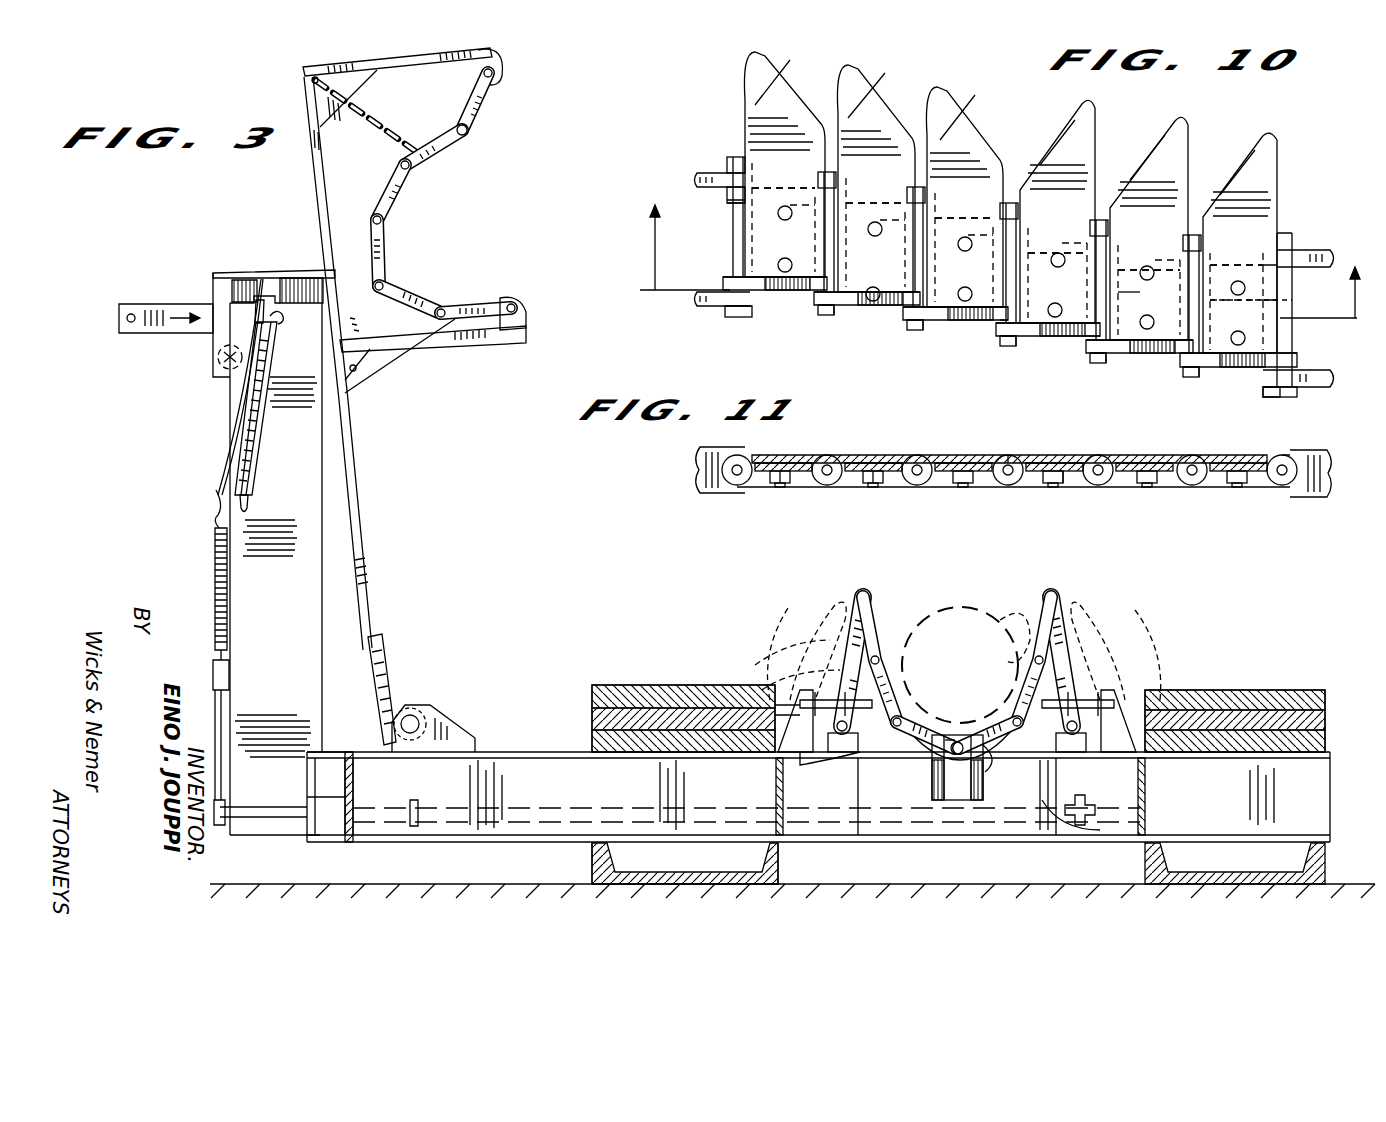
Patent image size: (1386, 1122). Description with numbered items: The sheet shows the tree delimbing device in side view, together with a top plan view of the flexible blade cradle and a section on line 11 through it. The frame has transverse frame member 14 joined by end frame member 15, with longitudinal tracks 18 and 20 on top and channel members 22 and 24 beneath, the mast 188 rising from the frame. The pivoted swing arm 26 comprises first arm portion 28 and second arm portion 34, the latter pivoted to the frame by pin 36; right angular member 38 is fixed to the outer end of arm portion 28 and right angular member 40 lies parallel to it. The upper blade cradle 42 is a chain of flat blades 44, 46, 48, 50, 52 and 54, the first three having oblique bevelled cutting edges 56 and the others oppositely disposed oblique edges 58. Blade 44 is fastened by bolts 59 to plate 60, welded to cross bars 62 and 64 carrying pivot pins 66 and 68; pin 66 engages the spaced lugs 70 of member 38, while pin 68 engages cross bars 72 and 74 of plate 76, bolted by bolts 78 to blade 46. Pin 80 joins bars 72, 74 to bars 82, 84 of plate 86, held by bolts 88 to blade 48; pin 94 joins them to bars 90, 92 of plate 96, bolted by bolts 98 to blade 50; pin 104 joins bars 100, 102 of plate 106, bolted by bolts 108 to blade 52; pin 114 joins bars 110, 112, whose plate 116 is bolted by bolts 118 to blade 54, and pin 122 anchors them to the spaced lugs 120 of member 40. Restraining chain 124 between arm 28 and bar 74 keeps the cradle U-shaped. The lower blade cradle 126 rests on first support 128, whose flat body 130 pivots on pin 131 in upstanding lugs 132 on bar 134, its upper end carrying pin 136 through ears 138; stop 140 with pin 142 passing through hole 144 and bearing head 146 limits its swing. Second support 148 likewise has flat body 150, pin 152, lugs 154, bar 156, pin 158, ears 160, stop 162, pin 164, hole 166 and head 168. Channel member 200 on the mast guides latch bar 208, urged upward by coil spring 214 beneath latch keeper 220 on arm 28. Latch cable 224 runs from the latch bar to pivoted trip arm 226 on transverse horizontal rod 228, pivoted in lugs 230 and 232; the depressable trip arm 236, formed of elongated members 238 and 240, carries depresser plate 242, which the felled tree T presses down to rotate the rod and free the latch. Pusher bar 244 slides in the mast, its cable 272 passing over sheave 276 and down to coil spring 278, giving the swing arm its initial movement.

In FIG. 3, the transverse frame member 14 is at (485, 752).
In FIG. 3, the end frame member 15 is at (322, 750).
In FIG. 3, the longitudinal track and frame member 18 is at (596, 712).
In FIG. 3, the longitudinal track and frame member 20 is at (1325, 705).
In FIG. 3, the channel member 22 is at (590, 862).
In FIG. 3, the channel member 24 is at (1328, 878).
In FIG. 3, the pivoted swing arm 26 is at (368, 513).
In FIG. 3, the first arm portion 28 is at (320, 190).
In FIG. 3, the second arm portion 34 is at (372, 580).
In FIG. 3, the pin 36 is at (412, 718).
In FIG. 3, the right angular member 38 is at (400, 58).
In FIG. 3, the right angular member 40 is at (512, 343).
In FIG. 3, the upper blade cradle 42 is at (398, 228).
In FIG. 10, the upper blade cradle 42 is at (1045, 355).
In FIG. 3, the blade 44 is at (480, 107).
In FIG. 10, the blade 44 is at (745, 103).
In FIG. 11, the blade 44 is at (770, 458).
In FIG. 3, the blade 46 is at (440, 152).
In FIG. 10, the blade 46 is at (840, 95).
In FIG. 11, the blade 46 is at (880, 456).
In FIG. 3, the blade 48 is at (398, 195).
In FIG. 10, the blade 48 is at (928, 122).
In FIG. 11, the blade 48 is at (962, 456).
In FIG. 3, the blade 50 is at (388, 258).
In FIG. 10, the blade 50 is at (1095, 148).
In FIG. 11, the blade 50 is at (1060, 457).
In FIG. 3, the blade 52 is at (412, 300).
In FIG. 10, the blade 52 is at (1190, 150).
In FIG. 11, the blade 52 is at (1152, 457).
In FIG. 3, the blade 54 is at (485, 305).
In FIG. 10, the blade 54 is at (1280, 175).
In FIG. 11, the blade 54 is at (1238, 457).
In FIG. 10, the oblique bevelled cutting edge 56 is at (770, 65).
In FIG. 10, the oblique cutting edge 58 is at (1075, 118).
In FIG. 10, the bolts 59 is at (792, 216).
In FIG. 11, the bolts 59 is at (783, 488).
In FIG. 10, the plate 60 is at (727, 218).
In FIG. 11, the plate 60 is at (775, 485).
In FIG. 10, the cross bar 62 is at (792, 292).
In FIG. 10, the cross bar 64 is at (778, 188).
In FIG. 11, the cross bar 64 is at (805, 488).
In FIG. 3, the pivot pin 66 is at (505, 74).
In FIG. 10, the pivot pin 66 is at (735, 317).
In FIG. 11, the pivot pin 66 is at (720, 470).
In FIG. 10, the pivot pin 68 is at (826, 315).
In FIG. 11, the pivot pin 68 is at (868, 485).
In FIG. 3, the spaced lugs 70 is at (496, 66).
In FIG. 10, the spaced lugs 70 is at (715, 170).
In FIG. 11, the spaced lugs 70 is at (712, 478).
In FIG. 10, the cross bar 72 is at (870, 306).
In FIG. 3, the cross bar 74 is at (457, 124).
In FIG. 10, the cross bar 74 is at (860, 200).
In FIG. 11, the cross bar 74 is at (858, 488).
In FIG. 10, the plate 76 is at (895, 248).
In FIG. 11, the plate 76 is at (897, 485).
In FIG. 10, the bolts 78 is at (880, 222).
In FIG. 11, the bolts 78 is at (876, 488).
In FIG. 10, the pivot pin 80 is at (915, 332).
In FIG. 11, the pivot pin 80 is at (930, 485).
In FIG. 10, the bar 82 is at (962, 322).
In FIG. 10, the bar 84 is at (958, 218).
In FIG. 11, the bar 84 is at (950, 488).
In FIG. 10, the plate 86 is at (1000, 322).
In FIG. 11, the plate 86 is at (1080, 488).
In FIG. 10, the bolts 88 is at (972, 250).
In FIG. 11, the bolts 88 is at (1048, 485).
In FIG. 10, the bar 90 is at (1050, 338).
In FIG. 10, the bar 92 is at (1050, 230).
In FIG. 10, the pin 94 is at (1010, 348).
In FIG. 11, the pin 94 is at (1008, 462).
In FIG. 10, the plate 96 is at (1092, 340).
In FIG. 11, the plate 96 is at (1075, 486).
In FIG. 10, the bolts 98 is at (1065, 264).
In FIG. 10, the bar 100 is at (1135, 248).
In FIG. 10, the bar 102 is at (1120, 348).
In FIG. 10, the pin 104 is at (1100, 365).
In FIG. 10, the plate 106 is at (1120, 300).
In FIG. 11, the plate 106 is at (1165, 485).
In FIG. 10, the bolts 108 is at (1150, 266).
In FIG. 3, the bar 110 is at (470, 330).
In FIG. 10, the bar 110 is at (1232, 265).
In FIG. 11, the bar 110 is at (1237, 485).
In FIG. 10, the bar 112 is at (1230, 368).
In FIG. 10, the pin 114 is at (1192, 368).
In FIG. 11, the pin 114 is at (1185, 487).
In FIG. 10, the hole 116 is at (1292, 300).
In FIG. 11, the hole 116 is at (1282, 485).
In FIG. 10, the bolts 118 is at (1248, 280).
In FIG. 3, the spaced lugs 120 is at (527, 320).
In FIG. 10, the spaced lugs 120 is at (1322, 252).
In FIG. 11, the spaced lugs 120 is at (1320, 478).
In FIG. 3, the pin 122 is at (516, 303).
In FIG. 10, the pin 122 is at (1280, 392).
In FIG. 11, the pin 122 is at (1282, 476).
In FIG. 3, the restraining chain 124 is at (372, 110).
In FIG. 3, the lower blade cradle 126 is at (926, 708).
In FIG. 3, the first support 128 is at (840, 627).
In FIG. 3, the flat body 130 is at (810, 655).
In FIG. 3, the pin 131 is at (805, 745).
In FIG. 3, the upstanding lugs 132 is at (843, 740).
In FIG. 3, the bar 134 is at (845, 770).
In FIG. 3, the pin 136 is at (863, 592).
In FIG. 3, the ears 138 is at (872, 600).
In FIG. 3, the stop 140 is at (762, 690).
In FIG. 3, the pin 142 is at (803, 692).
In FIG. 3, the hole 144 is at (770, 604).
In FIG. 3, the head 146 is at (925, 740).
In FIG. 3, the second support 148 is at (1076, 627).
In FIG. 3, the flat body 150 is at (1125, 670).
In FIG. 3, the pin 152 is at (1072, 740).
In FIG. 3, the upstanding lugs 154 is at (1075, 775).
In FIG. 3, the bar 156 is at (1092, 820).
In FIG. 3, the pin 158 is at (1055, 600).
In FIG. 3, the ears 160 is at (1050, 590).
In FIG. 3, the stop 162 is at (1112, 692).
In FIG. 3, the pin 164 is at (1110, 760).
In FIG. 3, the hole 166 is at (1032, 690).
In FIG. 3, the head 168 is at (1018, 660).
In FIG. 3, the mast 188 is at (312, 500).
In FIG. 3, the channel member 200 is at (250, 500).
In FIG. 3, the latch bar 208 is at (265, 305).
In FIG. 3, the coil spring 214 is at (268, 392).
In FIG. 3, the latch keeper 220 is at (262, 300).
In FIG. 3, the latch cable 224 is at (212, 500).
In FIG. 3, the pivoted trip arm 226 is at (222, 705).
In FIG. 3, the transverse horizontal rod 228 is at (545, 807).
In FIG. 3, the lug 230 is at (432, 778).
In FIG. 3, the lug 232 is at (1080, 832).
In FIG. 3, the depressable trip arm 236 is at (948, 770).
In FIG. 3, the elongated member 238 is at (1000, 770).
In FIG. 3, the elongated member 240 is at (940, 790).
In FIG. 3, the depresser plate 242 is at (965, 738).
In FIG. 3, the pusher bar 244 is at (158, 300).
In FIG. 3, the cable 272 is at (222, 400).
In FIG. 3, the sheave 276 is at (218, 357).
In FIG. 3, the coil spring 278 is at (228, 580).
In FIG. 3, the tree T is at (963, 604).
In FIG. 10, the section line 11- 11 is at (989, 282).